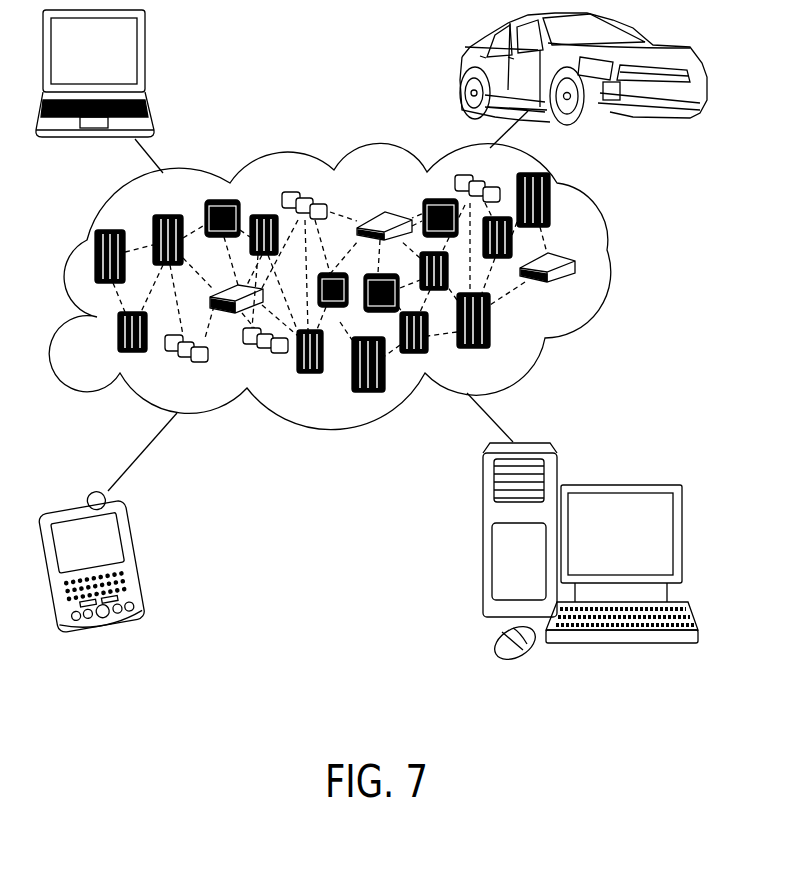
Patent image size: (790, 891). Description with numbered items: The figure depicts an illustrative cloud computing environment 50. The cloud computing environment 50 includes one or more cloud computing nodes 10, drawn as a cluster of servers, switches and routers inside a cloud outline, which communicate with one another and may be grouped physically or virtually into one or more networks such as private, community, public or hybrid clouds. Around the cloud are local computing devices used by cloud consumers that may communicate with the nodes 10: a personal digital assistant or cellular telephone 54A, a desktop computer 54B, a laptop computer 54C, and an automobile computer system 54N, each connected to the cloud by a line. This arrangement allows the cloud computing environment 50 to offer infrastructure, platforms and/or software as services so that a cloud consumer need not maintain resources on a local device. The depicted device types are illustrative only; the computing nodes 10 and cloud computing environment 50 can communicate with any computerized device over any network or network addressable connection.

The cloud computing nodes 10 is at (578, 287).
The cloud computing environment 50 is at (618, 263).
The personal digital assistant (PDA) or cellular telephone 54A is at (138, 557).
The desktop computer 54B is at (618, 483).
The laptop computer 54C is at (147, 58).
The automobile computer system 54N is at (462, 68).